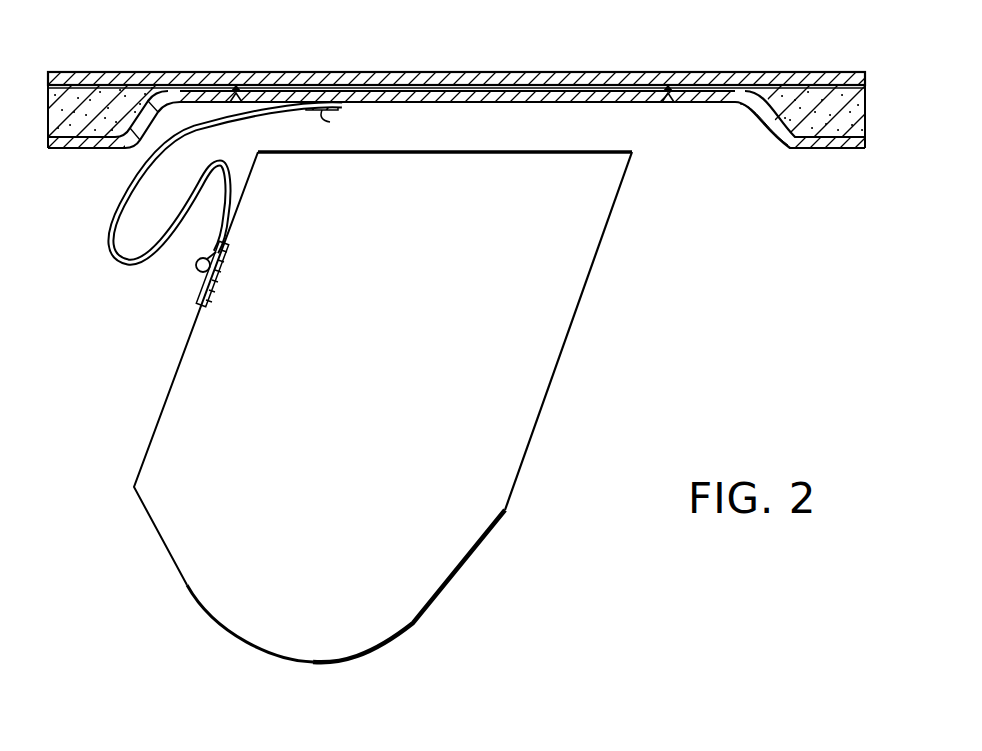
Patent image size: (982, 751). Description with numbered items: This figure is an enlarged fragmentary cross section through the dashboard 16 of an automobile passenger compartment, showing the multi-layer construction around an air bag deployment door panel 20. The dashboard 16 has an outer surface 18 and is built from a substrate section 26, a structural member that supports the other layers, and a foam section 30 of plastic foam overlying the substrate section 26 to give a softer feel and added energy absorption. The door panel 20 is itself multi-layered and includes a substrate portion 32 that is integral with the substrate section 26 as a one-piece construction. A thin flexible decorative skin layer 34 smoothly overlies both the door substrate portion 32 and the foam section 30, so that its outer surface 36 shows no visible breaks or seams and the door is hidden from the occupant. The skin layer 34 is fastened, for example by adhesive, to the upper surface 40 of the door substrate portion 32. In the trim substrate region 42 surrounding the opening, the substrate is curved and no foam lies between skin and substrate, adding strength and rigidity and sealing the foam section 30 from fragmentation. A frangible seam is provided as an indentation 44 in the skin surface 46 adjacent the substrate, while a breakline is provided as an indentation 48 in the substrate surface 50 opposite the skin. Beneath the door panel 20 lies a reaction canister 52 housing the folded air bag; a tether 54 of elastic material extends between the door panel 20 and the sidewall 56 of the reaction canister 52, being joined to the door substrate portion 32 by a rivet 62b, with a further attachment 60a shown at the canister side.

The dashboard 16 is at (782, 67).
The outer surface 18 is at (827, 69).
The air bag deployment door panel 20 is at (403, 70).
The substrate section 26 is at (841, 150).
The foam section 30 is at (810, 148).
The substrate portion 32 is at (467, 100).
The decorative skin layer 34 is at (708, 78).
The outer surface 36 is at (740, 86).
The upper surface 40 is at (528, 89).
The trim substrate region 42 is at (732, 112).
The indentation 44 is at (240, 87).
The skin surface 46 is at (288, 86).
The indentation 48 is at (233, 88).
The substrate surface 50 is at (650, 104).
The reaction canister 52 is at (520, 361).
The tether 54 is at (116, 254).
The sidewall 56 is at (185, 352).
The attachment loop 60a is at (193, 272).
The rivet 62b is at (330, 114).